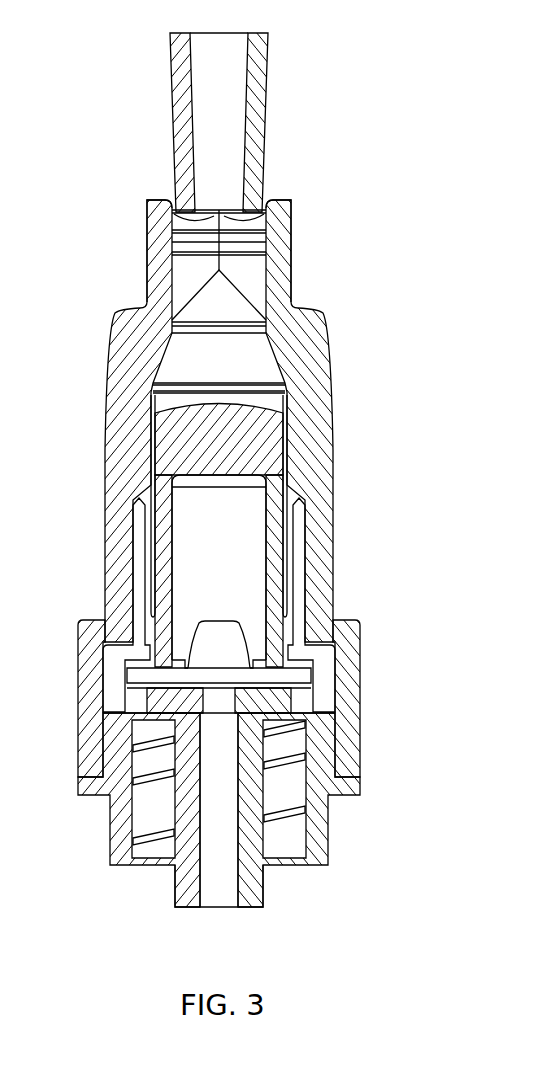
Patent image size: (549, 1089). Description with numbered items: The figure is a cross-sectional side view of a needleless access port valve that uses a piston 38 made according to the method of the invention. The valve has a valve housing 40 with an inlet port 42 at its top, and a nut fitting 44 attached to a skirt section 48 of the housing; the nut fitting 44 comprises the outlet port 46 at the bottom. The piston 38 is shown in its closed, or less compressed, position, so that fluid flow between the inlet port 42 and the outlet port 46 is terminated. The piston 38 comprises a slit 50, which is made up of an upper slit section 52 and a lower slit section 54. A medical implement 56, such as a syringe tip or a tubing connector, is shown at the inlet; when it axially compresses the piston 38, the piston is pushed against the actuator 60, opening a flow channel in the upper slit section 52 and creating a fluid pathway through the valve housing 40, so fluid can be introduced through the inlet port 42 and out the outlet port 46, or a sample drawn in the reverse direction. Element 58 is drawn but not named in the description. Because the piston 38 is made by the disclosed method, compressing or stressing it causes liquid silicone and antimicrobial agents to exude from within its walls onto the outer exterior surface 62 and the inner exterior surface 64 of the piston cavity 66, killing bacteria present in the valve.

The piston 38 is at (271, 448).
The valve housing 40 is at (105, 388).
The inlet port 42 is at (273, 199).
The nut fitting 44 is at (108, 830).
The outlet port 46 is at (220, 907).
The skirt section 48 is at (363, 703).
The slit 50 is at (220, 243).
The upper slit section 52 is at (208, 222).
The lower slit section 54 is at (200, 291).
The medical implement 56 is at (268, 67).
The insert 58 is at (247, 219).
The actuator 60 is at (226, 295).
The outer exterior surface 62 is at (151, 452).
The inner exterior surface 64 is at (290, 562).
The piston cavity 66 is at (178, 546).